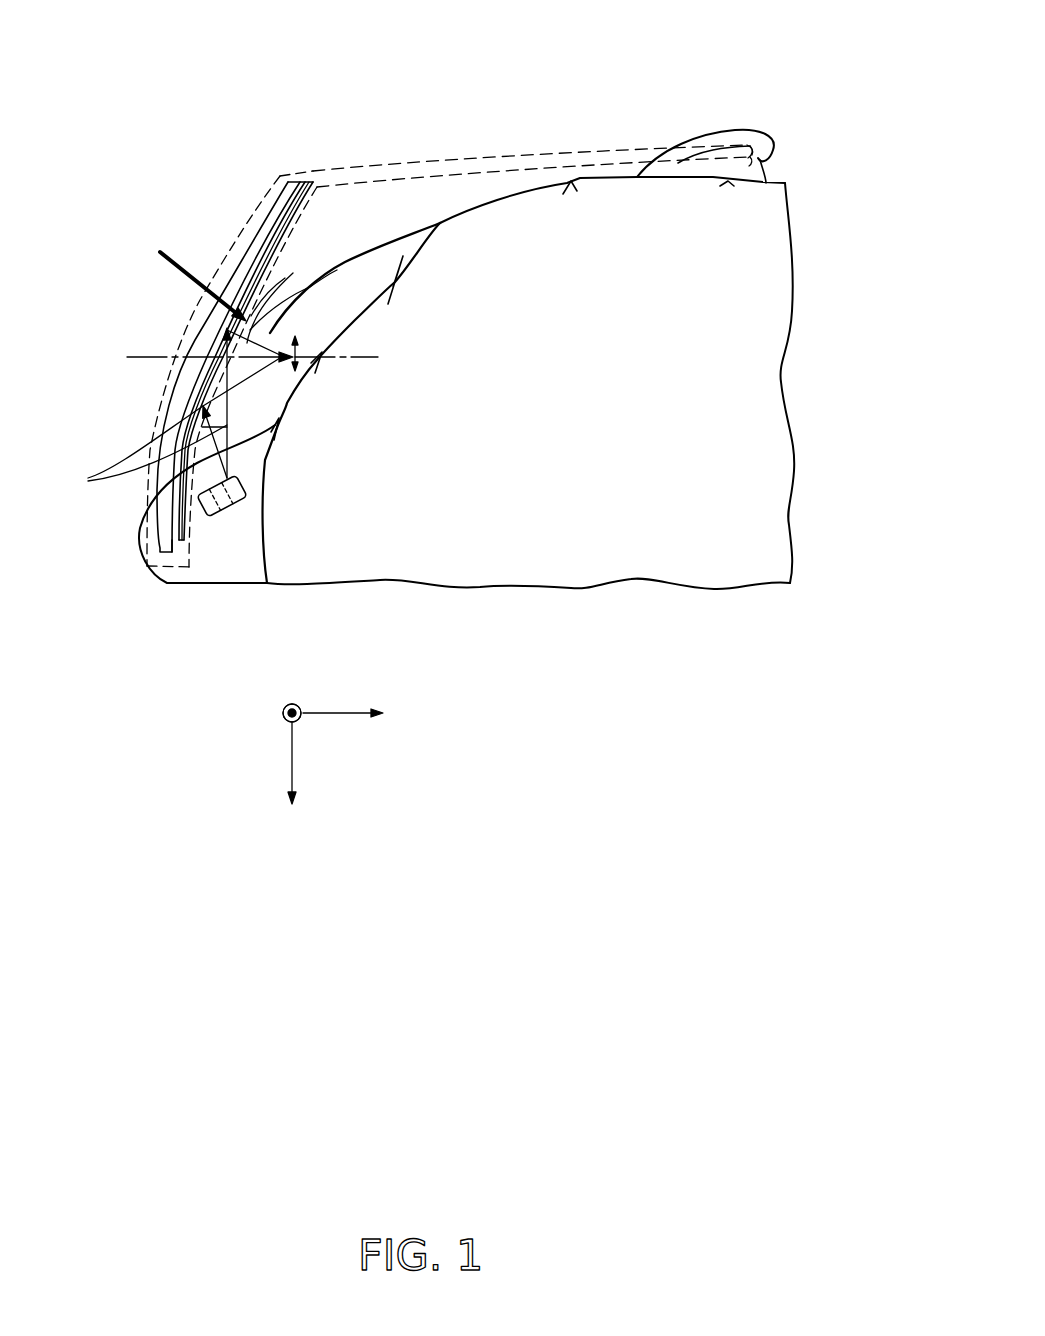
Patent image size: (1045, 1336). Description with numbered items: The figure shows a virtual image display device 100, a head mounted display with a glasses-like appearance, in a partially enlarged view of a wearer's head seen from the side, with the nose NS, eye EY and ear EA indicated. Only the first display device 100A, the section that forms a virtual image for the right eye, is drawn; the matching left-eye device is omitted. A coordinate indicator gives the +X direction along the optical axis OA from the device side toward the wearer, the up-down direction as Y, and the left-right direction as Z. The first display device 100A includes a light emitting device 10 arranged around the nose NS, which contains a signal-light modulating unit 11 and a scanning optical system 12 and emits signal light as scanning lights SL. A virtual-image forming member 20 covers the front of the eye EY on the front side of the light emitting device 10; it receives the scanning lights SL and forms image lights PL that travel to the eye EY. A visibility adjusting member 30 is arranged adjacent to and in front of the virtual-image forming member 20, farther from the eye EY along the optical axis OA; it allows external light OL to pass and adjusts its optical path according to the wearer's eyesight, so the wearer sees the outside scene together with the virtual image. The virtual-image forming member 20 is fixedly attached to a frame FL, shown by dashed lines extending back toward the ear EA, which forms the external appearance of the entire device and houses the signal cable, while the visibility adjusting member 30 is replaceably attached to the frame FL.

The virtual image display device 100 is at (281, 100).
The first display device 100A is at (235, 172).
The visibility adjusting member 30 is at (253, 240).
The virtual-image forming member 20 is at (240, 292).
The light emitting device 10 is at (223, 525).
The signal-light modulating unit 11 is at (203, 515).
The scanning optical system 12 is at (238, 503).
The image lights PL is at (262, 305).
The scanning lights SL is at (143, 451).
The external light OL is at (190, 277).
The optical axis OA is at (167, 357).
The eye EY is at (297, 340).
The nose NS is at (167, 585).
The ear EA is at (724, 153).
The frame FL is at (498, 157).
The X direction X is at (343, 696).
The Y direction Y is at (286, 699).
The Z direction Z is at (284, 766).